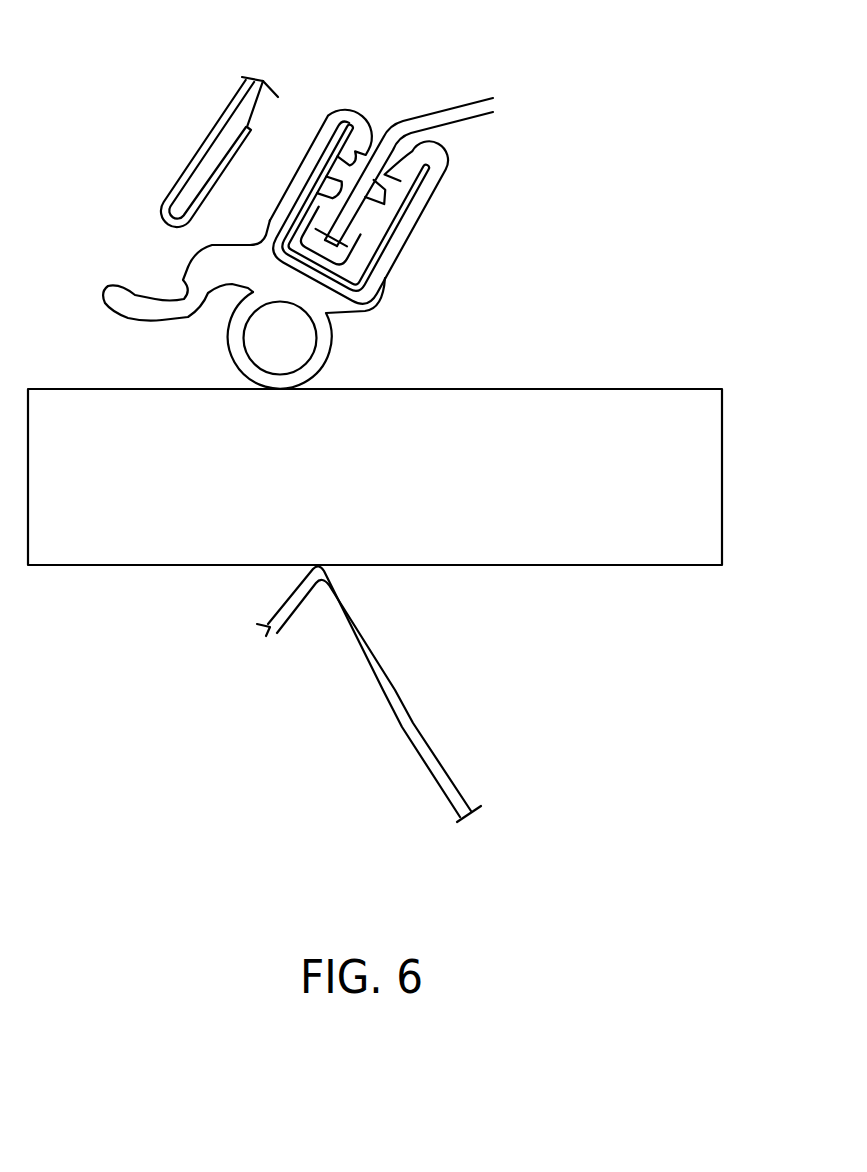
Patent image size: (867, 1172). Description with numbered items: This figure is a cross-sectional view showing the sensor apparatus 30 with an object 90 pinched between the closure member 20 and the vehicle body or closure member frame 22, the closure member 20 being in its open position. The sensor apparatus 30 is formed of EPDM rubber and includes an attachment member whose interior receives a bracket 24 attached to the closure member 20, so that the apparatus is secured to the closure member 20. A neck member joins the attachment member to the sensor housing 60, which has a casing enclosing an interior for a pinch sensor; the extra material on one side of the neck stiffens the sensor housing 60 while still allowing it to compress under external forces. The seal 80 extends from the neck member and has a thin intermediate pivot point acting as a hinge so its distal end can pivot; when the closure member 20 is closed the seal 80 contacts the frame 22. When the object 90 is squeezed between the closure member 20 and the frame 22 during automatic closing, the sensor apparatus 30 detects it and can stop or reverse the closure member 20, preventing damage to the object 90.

The closure member 20 is at (148, 117).
The closure member frame 22 is at (388, 734).
The bracket 24 is at (457, 108).
The sensor apparatus 30 is at (333, 239).
The sensor housing 60 is at (352, 340).
The seal 80 is at (128, 258).
The object 90 is at (641, 370).